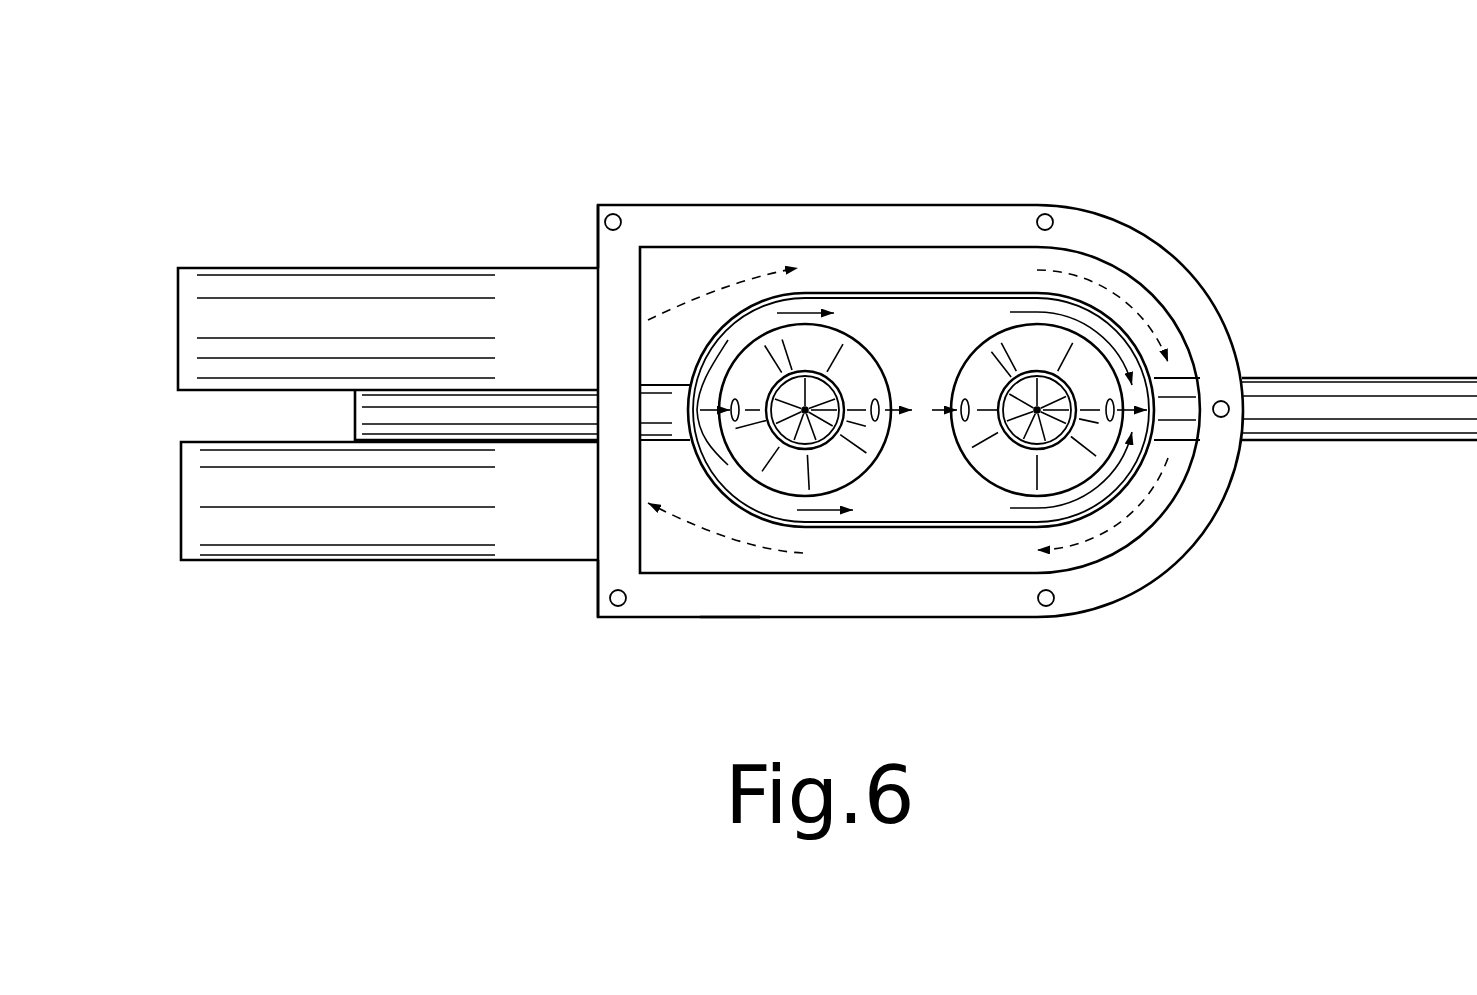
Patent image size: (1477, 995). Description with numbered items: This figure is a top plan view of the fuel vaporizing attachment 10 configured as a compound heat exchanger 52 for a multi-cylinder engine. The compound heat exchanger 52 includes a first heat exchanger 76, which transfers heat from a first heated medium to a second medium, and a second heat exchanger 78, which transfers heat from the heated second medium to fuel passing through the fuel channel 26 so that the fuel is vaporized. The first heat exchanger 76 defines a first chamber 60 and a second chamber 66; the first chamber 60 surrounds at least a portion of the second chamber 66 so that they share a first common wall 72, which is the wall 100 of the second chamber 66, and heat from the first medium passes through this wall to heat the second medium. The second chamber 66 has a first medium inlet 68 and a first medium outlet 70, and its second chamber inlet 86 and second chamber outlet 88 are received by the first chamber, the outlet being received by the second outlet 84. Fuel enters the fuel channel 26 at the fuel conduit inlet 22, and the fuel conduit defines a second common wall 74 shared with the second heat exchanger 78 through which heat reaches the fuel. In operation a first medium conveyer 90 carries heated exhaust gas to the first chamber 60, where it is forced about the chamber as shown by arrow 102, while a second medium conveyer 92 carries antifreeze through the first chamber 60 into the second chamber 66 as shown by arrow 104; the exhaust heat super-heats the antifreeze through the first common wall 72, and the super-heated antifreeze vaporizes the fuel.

The fuel vaporizing attachment 10 is at (1152, 185).
The fuel conduit inlet 22 is at (953, 370).
The fuel channel 26 is at (1023, 445).
The compound heat exchanger 52 is at (1222, 207).
The first chamber 60 is at (1190, 550).
The second chamber 66 is at (845, 530).
The first medium inlet 68 is at (583, 248).
The first medium outlet 70 is at (588, 570).
The first common wall 72 is at (967, 527).
The second common wall 74 is at (993, 333).
The first heat exchanger 76 is at (723, 637).
The second heat exchanger 78 is at (830, 268).
The second outlet 84 is at (1248, 365).
The second chamber inlet 86 is at (688, 452).
The second chamber outlet 88 is at (1163, 277).
The first medium conveyer 90 is at (415, 265).
The second medium conveyer 92 is at (355, 415).
The wall of the second chamber 100 is at (893, 283).
The arrow 102 is at (705, 295).
The arrow 104 is at (1030, 310).